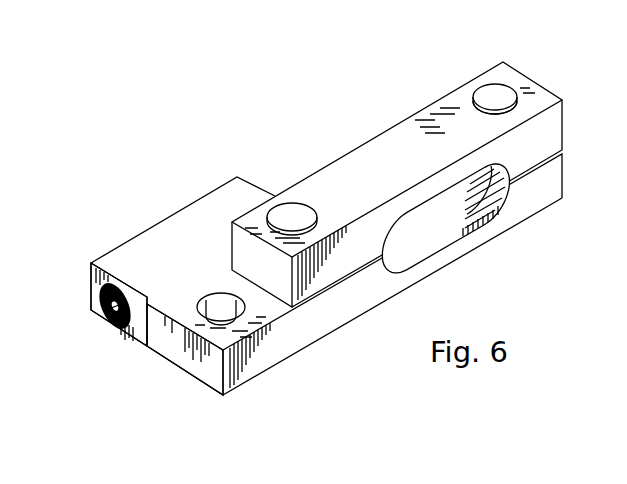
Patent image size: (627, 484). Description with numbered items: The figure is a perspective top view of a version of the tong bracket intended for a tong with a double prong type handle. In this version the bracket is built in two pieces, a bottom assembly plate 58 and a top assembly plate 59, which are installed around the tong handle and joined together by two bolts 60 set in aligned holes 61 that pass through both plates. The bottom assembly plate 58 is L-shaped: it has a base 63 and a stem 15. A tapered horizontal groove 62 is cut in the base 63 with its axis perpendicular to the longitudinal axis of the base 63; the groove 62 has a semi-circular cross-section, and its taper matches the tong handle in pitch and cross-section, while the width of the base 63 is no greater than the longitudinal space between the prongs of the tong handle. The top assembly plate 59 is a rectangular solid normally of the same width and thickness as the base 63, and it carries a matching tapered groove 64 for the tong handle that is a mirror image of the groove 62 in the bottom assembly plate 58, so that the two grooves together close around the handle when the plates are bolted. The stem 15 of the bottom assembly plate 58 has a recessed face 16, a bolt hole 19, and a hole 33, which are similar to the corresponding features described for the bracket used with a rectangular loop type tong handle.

The stem 15 is at (180, 360).
The recessed face 16 is at (137, 325).
The bolt hole 19 is at (103, 300).
The hole 33 is at (270, 314).
The bottom assembly plate 58 is at (563, 184).
The top assembly plate 59 is at (563, 137).
The bolts 60 is at (489, 99).
The aligned holes 61 is at (512, 107).
The tapered horizontal groove 62 is at (466, 230).
The base 63 is at (442, 268).
The matching tapered groove 64 is at (512, 197).